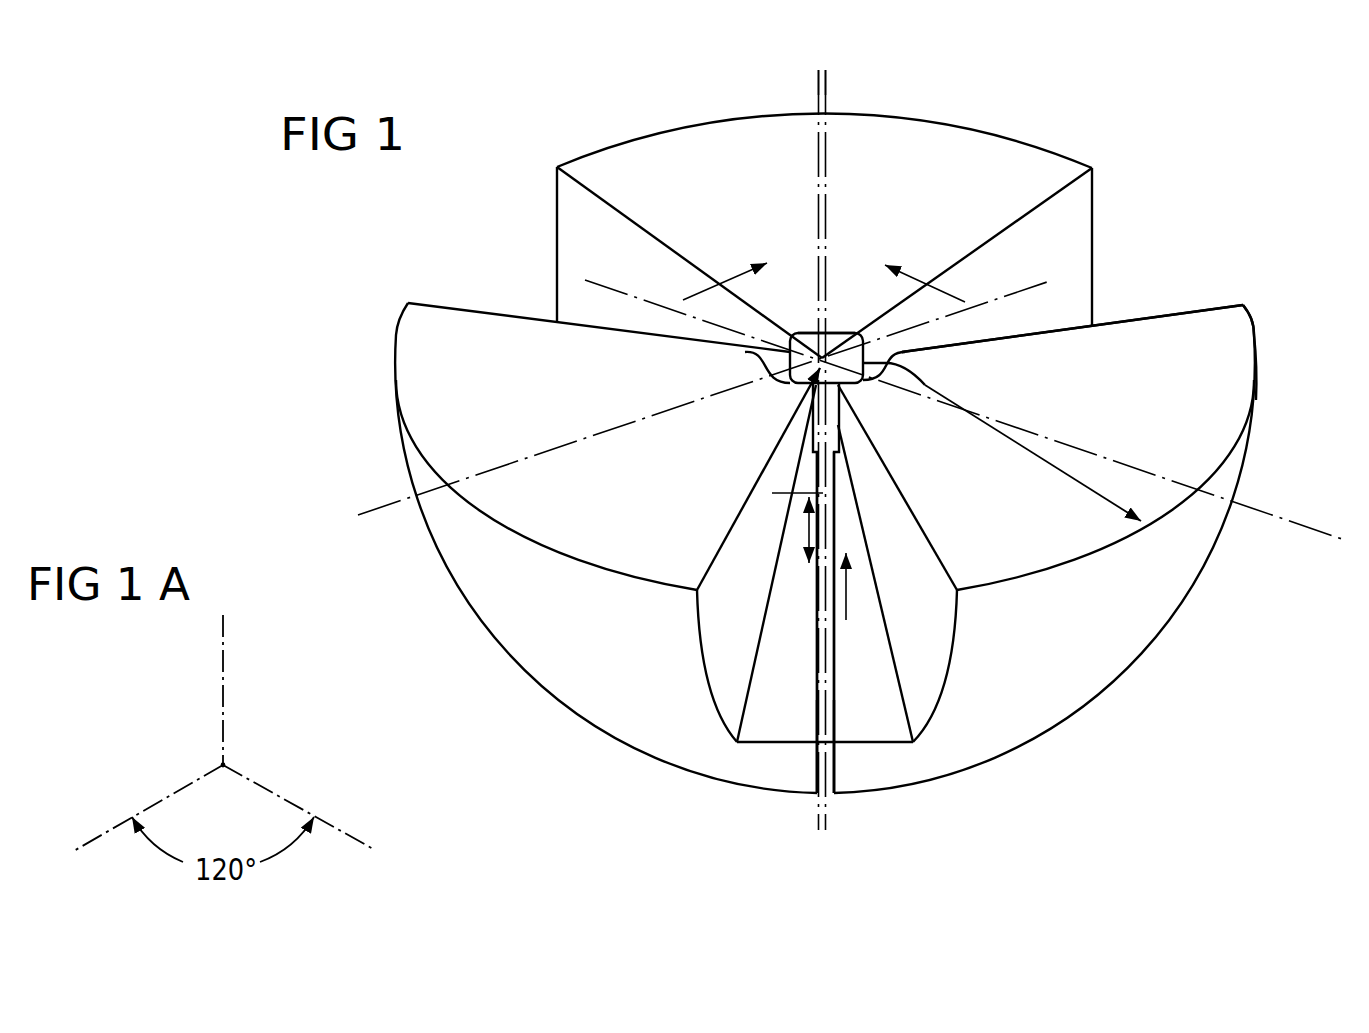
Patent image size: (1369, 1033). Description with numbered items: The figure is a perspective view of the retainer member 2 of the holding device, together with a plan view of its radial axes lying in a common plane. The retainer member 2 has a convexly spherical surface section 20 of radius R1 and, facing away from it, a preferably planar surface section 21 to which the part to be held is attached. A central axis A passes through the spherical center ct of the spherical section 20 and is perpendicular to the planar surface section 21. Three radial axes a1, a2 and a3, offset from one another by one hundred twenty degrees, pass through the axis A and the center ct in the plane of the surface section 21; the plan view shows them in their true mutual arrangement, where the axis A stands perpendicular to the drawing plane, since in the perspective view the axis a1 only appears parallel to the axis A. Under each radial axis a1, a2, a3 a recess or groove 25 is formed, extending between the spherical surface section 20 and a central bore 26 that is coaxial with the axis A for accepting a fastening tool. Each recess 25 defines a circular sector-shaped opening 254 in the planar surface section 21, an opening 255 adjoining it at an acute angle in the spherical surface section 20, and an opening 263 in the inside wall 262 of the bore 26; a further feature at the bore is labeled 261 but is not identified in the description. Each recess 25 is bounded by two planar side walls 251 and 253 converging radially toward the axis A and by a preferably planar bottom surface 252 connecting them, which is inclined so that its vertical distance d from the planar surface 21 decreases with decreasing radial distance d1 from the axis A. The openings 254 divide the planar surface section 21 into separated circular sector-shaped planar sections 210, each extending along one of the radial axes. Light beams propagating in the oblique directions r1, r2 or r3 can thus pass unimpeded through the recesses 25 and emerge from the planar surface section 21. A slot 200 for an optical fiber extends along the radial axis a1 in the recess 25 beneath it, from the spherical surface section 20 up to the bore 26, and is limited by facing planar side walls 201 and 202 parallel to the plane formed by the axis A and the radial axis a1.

In FIG. 1, the retainer member 2 is at (1258, 462).
In FIG. 1, the convexly spherical surface section 20 is at (1148, 640).
In FIG. 1, the planar surface section 21 is at (1196, 322).
In FIG. 1, the circular sector-shaped planar section 210 is at (1248, 420).
In FIG. 1, the recess or groove 25 is at (520, 293).
In FIG. 1, the planar side wall 251 is at (1077, 250).
In FIG. 1, the bottom surface 252 is at (856, 678).
In FIG. 1, the planar side wall 253 is at (585, 242).
In FIG. 1, the circular sector-shaped opening 254 is at (600, 195).
In FIG. 1, the opening 255 is at (557, 203).
In FIG. 1, the bore 26 is at (802, 332).
In FIG. 1, the hub top 261 is at (848, 334).
In FIG. 1, the inside wall 262 is at (790, 378).
In FIG. 1, the opening 263 is at (765, 350).
In FIG. 1, the slot 200 is at (820, 757).
In FIG. 1, the planar side wall 201 is at (775, 788).
In FIG. 1, the planar side wall 202 is at (827, 700).
In FIG. 1, the radial axis a1 is at (817, 82).
In FIG. 1A, the radial axis a1 is at (221, 668).
In FIG. 1, the radial axis a2 is at (1345, 540).
In FIG. 1A, the radial axis a2 is at (317, 817).
In FIG. 1, the radial axis a3 is at (362, 512).
In FIG. 1A, the radial axis a3 is at (130, 817).
In FIG. 1, the central axis A is at (827, 82).
In FIG. 1A, the central axis A is at (227, 760).
In FIG. 1, the spherical center ct is at (892, 380).
In FIG. 1, the radius R1 is at (940, 420).
In FIG. 1, the direction r1 is at (846, 600).
In FIG. 1, the direction r2 is at (722, 283).
In FIG. 1, the direction r3 is at (930, 275).
In FIG. 1, the vertical distance d is at (809, 537).
In FIG. 1, the radial distance d1 is at (788, 493).